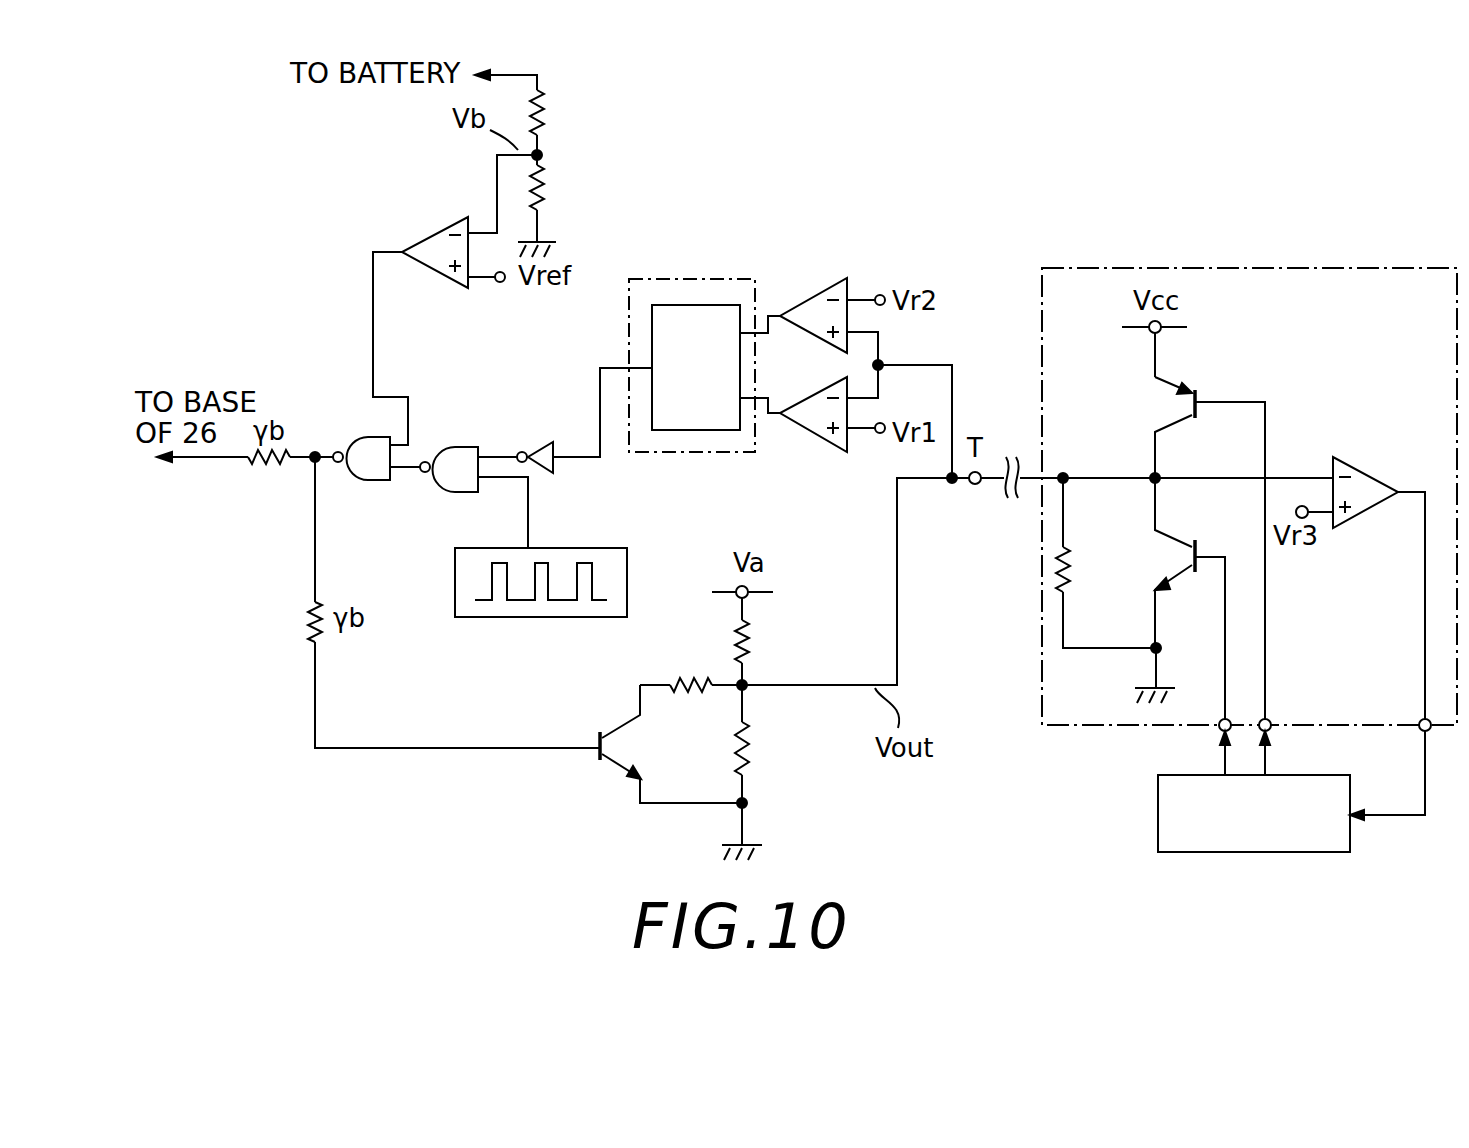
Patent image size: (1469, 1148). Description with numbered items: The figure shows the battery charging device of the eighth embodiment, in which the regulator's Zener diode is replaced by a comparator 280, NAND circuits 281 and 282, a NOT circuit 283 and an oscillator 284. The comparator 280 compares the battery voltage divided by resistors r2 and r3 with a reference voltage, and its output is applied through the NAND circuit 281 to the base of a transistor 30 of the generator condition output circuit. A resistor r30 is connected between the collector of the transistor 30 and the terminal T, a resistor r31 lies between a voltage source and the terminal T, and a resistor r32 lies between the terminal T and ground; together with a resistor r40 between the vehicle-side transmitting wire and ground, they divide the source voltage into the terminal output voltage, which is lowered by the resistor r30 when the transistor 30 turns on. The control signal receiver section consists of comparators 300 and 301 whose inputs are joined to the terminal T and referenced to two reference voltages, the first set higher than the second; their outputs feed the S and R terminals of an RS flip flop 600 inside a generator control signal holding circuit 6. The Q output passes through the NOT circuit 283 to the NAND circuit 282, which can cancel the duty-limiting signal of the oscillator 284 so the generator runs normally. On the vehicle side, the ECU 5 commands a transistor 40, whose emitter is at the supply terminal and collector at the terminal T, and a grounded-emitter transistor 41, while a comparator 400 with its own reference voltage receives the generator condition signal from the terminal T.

The comparator 280 is at (428, 250).
The NAND circuit 281 is at (370, 440).
The NAND circuit 282 is at (450, 483).
The NOT circuit 283 is at (545, 445).
The oscillator 284 is at (525, 617).
The generator control signal holding circuit 6 is at (680, 277).
The RS flip flop circuit 600 is at (713, 305).
The comparator 300 is at (818, 285).
The comparator 301 is at (810, 422).
The transistor 30 is at (618, 763).
The transistor 40 is at (1170, 382).
The transistor 41 is at (1185, 542).
The comparator 400 is at (1367, 480).
The ECU 5 is at (1158, 787).
The resistor r2 is at (545, 110).
The resistor r3 is at (545, 190).
The resistor r30 is at (695, 673).
The resistor r31 is at (752, 637).
The resistor r32 is at (752, 748).
The resistor r40 is at (1090, 535).